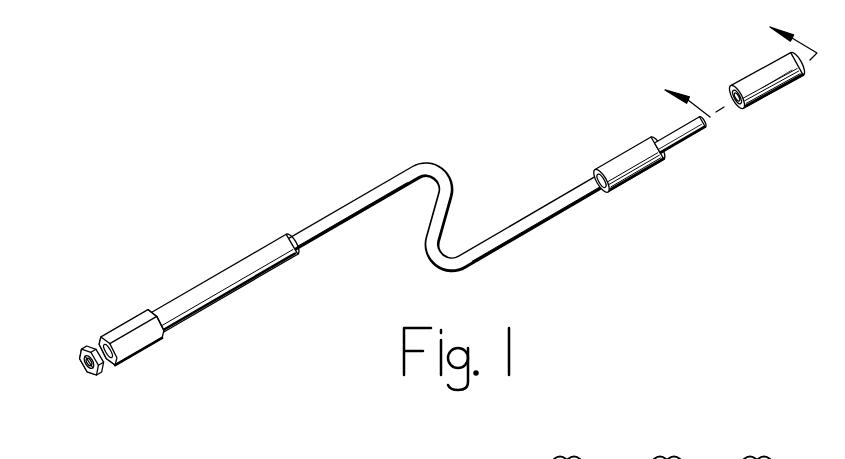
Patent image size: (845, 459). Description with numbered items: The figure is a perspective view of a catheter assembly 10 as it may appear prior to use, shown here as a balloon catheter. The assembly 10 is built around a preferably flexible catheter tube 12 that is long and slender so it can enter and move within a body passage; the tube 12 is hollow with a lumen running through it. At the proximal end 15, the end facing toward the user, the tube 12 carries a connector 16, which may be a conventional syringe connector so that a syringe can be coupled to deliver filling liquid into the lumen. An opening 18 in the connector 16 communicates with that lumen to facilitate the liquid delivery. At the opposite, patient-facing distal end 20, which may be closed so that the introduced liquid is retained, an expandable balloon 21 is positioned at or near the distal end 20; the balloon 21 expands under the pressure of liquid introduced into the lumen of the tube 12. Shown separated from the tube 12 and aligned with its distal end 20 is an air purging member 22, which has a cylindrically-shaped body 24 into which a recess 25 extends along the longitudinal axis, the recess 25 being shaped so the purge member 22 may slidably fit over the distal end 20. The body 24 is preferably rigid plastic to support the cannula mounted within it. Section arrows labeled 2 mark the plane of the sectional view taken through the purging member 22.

The catheter assembly 10 is at (494, 122).
The catheter tube 12 is at (345, 202).
The proximal end 15 is at (193, 287).
The connector 16 is at (83, 355).
The opening 18 is at (82, 372).
The distal end 20 is at (684, 132).
The expandable balloon 21 is at (622, 150).
The air purging member 22 is at (747, 74).
The cylindrically-shaped body 24 is at (782, 72).
The recess 25 is at (734, 105).
The section line 2- 2 is at (731, 62).